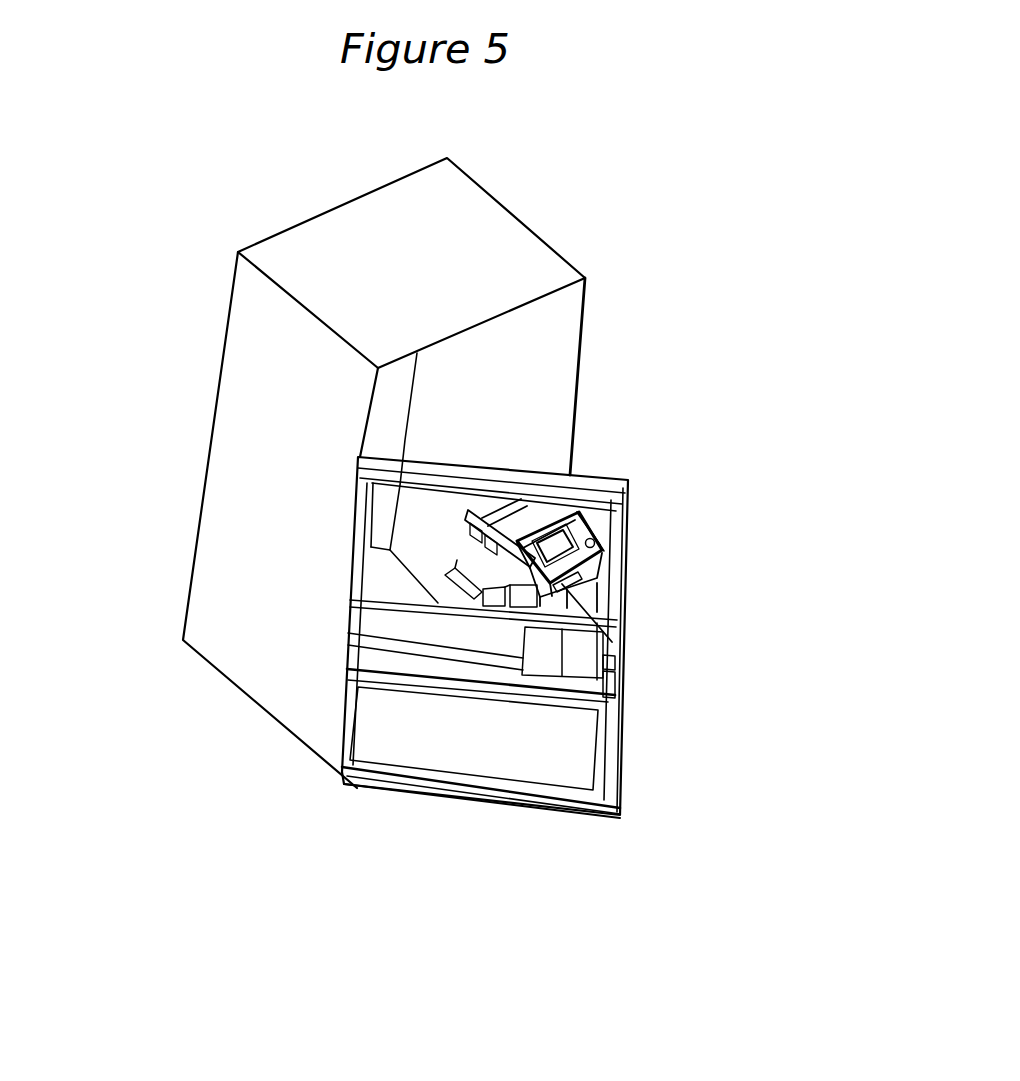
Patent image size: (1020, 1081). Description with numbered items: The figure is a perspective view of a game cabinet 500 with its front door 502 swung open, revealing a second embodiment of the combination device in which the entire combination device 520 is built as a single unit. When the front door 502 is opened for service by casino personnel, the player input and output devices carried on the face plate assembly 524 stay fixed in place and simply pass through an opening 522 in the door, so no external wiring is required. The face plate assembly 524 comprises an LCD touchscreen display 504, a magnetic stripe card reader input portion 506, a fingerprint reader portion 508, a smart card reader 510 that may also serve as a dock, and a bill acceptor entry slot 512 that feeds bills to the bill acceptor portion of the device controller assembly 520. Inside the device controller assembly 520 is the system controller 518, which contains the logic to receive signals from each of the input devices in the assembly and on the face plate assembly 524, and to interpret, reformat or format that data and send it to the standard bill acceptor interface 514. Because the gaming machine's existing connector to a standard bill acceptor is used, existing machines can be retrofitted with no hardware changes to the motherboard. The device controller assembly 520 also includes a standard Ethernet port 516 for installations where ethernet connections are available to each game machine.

The game cabinet 500 is at (473, 259).
The front door 502 is at (522, 808).
The LCD touchscreen display 504 is at (567, 523).
The magnetic stripe card reader input portion 506 is at (597, 530).
The fingerprint reader portion 508 is at (598, 552).
The smart card reader 510 is at (575, 564).
The bill acceptor entry slot 512 is at (586, 668).
The standard bill acceptor interface 514 is at (468, 511).
The Ethernet port 516 is at (493, 537).
The system controller 518 is at (460, 594).
The device controller assembly 520 is at (524, 521).
The opening 522 is at (586, 790).
The face plate assembly 524 is at (584, 514).